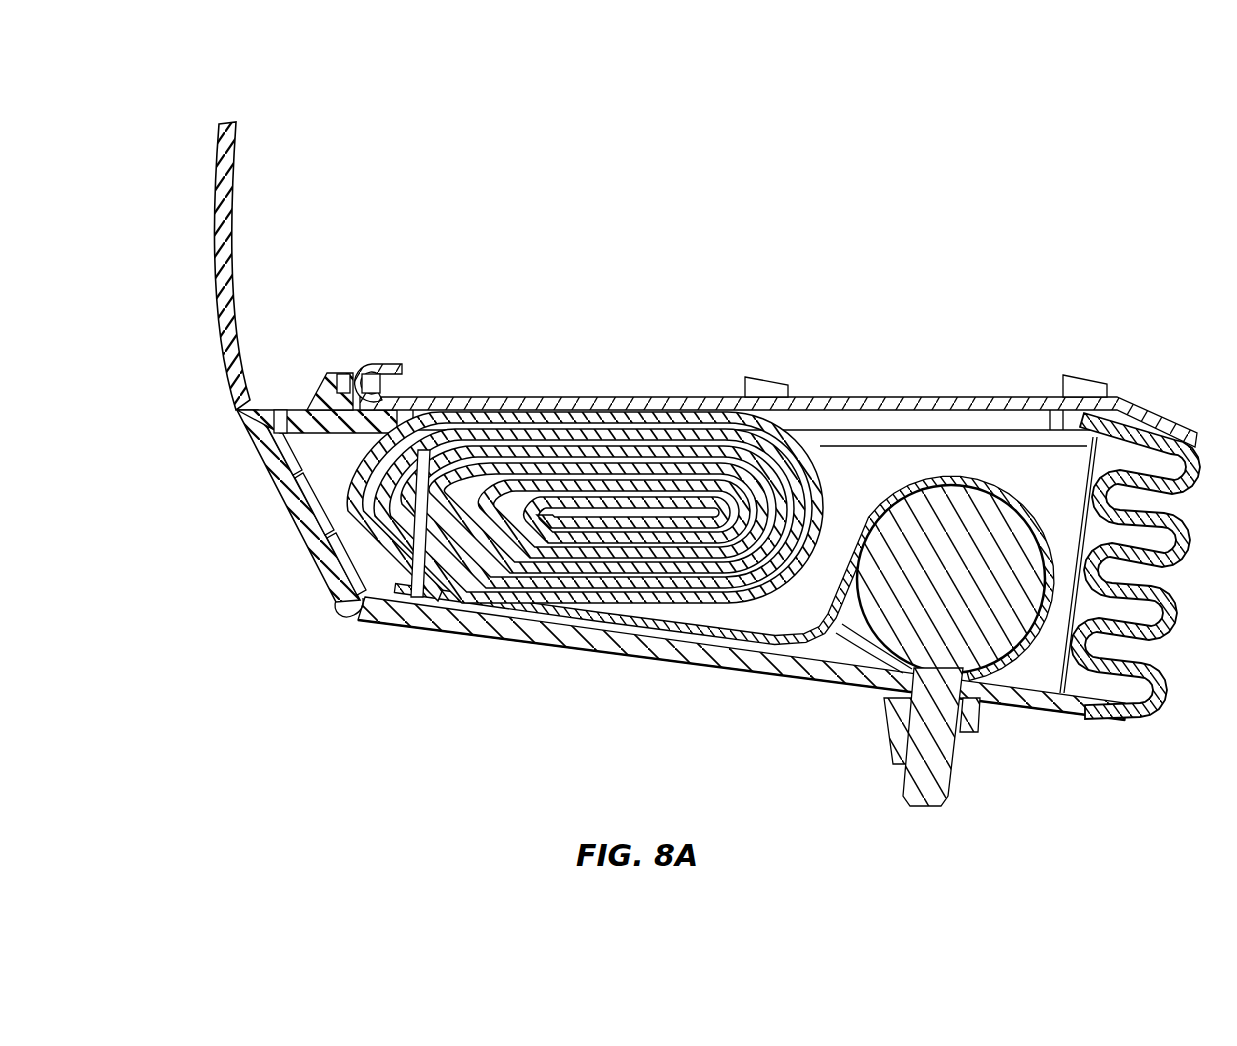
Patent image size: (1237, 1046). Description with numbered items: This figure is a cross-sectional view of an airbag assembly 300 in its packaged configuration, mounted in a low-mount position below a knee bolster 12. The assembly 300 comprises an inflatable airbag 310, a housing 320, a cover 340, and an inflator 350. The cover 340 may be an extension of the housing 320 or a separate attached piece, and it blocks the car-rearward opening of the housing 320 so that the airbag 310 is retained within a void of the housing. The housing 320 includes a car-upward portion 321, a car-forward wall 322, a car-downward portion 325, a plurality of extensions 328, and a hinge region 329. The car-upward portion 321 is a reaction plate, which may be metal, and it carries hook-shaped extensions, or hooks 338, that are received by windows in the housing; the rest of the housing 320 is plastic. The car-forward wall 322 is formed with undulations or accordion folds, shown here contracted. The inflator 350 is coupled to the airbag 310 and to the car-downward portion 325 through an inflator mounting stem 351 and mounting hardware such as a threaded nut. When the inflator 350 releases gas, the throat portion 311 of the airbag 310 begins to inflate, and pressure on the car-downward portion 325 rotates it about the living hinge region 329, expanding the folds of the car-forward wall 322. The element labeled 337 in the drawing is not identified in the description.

The airbag assembly 300 is at (741, 110).
The knee bolster 12 is at (221, 215).
The inflatable airbag 310 is at (680, 448).
The throat portion 311 is at (864, 516).
The housing 320 is at (1012, 383).
The car-upward portion (reaction plate) 321 is at (500, 397).
The car-forward wall 322 is at (1172, 607).
The car-downward portion 325 is at (728, 668).
The extensions 328 is at (766, 385).
The hinge region 329 is at (357, 606).
The flange 337 is at (345, 384).
The hooks 338 is at (384, 368).
The cover 340 is at (290, 493).
The inflator 350 is at (990, 603).
The inflator mounting stem 351 is at (913, 773).